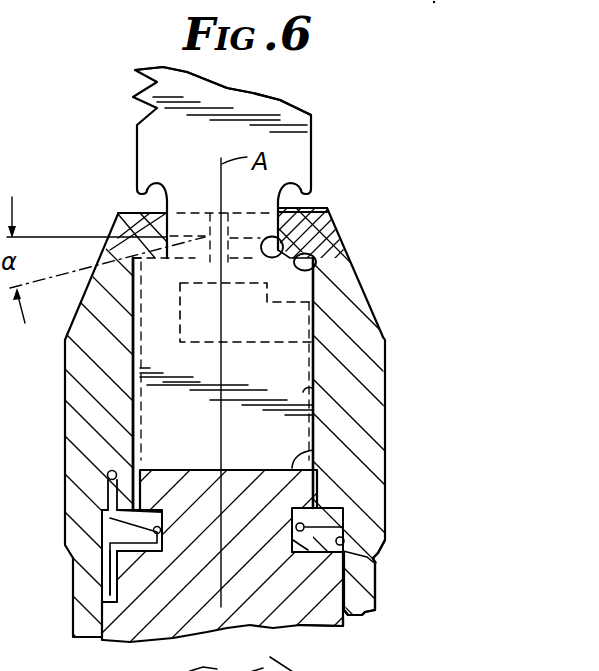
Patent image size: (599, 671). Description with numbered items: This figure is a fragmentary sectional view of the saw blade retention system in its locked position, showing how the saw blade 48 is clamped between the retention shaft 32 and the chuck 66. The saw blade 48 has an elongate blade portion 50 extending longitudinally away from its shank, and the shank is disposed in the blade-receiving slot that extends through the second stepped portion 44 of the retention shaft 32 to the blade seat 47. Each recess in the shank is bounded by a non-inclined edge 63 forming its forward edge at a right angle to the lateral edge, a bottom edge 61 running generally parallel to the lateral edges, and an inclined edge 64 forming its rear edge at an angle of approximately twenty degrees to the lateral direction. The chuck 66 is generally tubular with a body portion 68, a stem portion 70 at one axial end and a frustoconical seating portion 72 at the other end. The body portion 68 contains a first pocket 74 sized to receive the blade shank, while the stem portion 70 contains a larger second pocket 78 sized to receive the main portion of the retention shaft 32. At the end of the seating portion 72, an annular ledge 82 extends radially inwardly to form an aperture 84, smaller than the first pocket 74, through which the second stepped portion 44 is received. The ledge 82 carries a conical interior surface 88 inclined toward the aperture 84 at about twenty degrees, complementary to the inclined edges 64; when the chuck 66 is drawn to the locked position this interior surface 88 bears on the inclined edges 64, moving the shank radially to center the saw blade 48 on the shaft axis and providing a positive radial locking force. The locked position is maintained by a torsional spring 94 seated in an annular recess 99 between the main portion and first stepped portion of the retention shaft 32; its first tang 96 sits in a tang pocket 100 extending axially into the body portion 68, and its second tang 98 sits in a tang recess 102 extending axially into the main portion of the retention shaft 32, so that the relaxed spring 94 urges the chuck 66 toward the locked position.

The retention shaft 32 is at (352, 633).
The second stepped portion 44 is at (313, 302).
The blade seat 47 is at (315, 447).
The saw blade 48 is at (345, 96).
The blade portion 50 is at (262, 118).
The bottom edge 61 is at (140, 196).
The non-inclined edge 63 is at (138, 192).
The inclined edge 64 is at (117, 228).
The chuck 66 is at (390, 347).
The body portion 68 is at (377, 403).
The stem portion 70 is at (363, 597).
The seating portion 72 is at (360, 288).
The first pocket 74 is at (315, 390).
The second pocket 78 is at (373, 558).
The annular ledge 82 is at (327, 207).
The aperture 84 is at (327, 212).
The interior surface 88 is at (343, 243).
The spring 94 is at (305, 527).
The first tang 96 is at (107, 498).
The second tang 98 is at (110, 567).
The annular recess 99 is at (296, 528).
The tang pocket 100 is at (107, 476).
The tang recess 102 is at (108, 594).